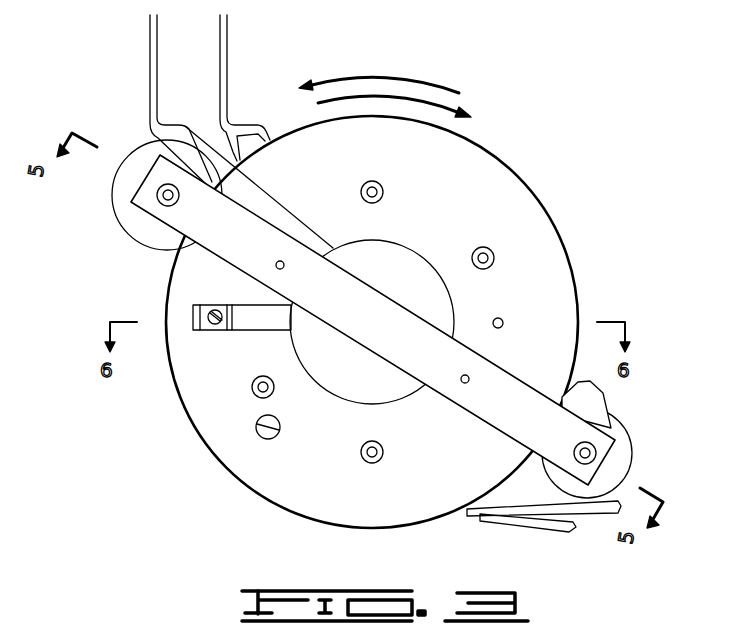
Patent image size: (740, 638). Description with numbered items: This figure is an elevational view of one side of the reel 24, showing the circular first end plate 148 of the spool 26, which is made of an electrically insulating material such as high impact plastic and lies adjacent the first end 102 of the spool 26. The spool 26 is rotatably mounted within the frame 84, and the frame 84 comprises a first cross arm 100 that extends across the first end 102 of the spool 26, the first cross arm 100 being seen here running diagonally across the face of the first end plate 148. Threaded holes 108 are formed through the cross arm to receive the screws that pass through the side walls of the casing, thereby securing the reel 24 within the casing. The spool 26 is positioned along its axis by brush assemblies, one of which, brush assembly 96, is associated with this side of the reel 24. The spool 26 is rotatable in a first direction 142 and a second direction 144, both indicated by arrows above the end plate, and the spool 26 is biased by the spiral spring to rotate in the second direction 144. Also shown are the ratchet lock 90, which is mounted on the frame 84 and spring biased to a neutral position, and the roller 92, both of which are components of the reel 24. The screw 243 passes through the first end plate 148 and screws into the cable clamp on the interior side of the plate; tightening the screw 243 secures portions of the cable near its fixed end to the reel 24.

The reel 24 is at (374, 273).
The spool 26 is at (560, 217).
The frame 84 is at (529, 384).
The ratchet lock 90 is at (613, 453).
The roller 92 is at (127, 197).
The brush assembly 96 is at (388, 257).
The first cross arm 100 is at (380, 313).
The first end 102 is at (548, 285).
The threaded holes 108 is at (283, 269).
The first direction 142 is at (408, 78).
The second direction 144 is at (350, 97).
The first end plate 148 is at (505, 187).
The screw 243 is at (270, 440).